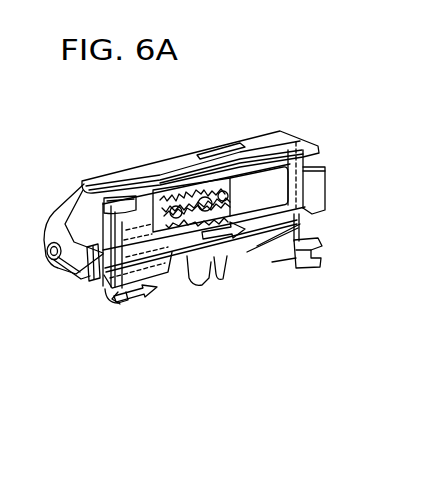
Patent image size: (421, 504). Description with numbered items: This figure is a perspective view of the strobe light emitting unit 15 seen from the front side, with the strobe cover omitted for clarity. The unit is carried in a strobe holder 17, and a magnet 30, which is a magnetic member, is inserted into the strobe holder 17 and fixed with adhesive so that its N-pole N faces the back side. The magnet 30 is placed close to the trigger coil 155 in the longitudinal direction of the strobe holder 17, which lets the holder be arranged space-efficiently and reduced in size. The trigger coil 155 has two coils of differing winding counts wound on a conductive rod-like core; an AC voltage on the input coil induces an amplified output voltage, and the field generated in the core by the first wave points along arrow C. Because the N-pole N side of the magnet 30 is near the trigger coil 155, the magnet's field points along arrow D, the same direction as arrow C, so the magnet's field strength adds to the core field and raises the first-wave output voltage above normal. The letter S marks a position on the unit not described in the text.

The cover 15 is at (157, 169).
The engaging member 155 is at (199, 196).
The side frame 17 is at (308, 146).
The bracket 30 is at (95, 272).
The slide position S is at (115, 292).
The drive direction D is at (134, 307).
The neutral position N is at (171, 260).
The connection direction C is at (222, 240).